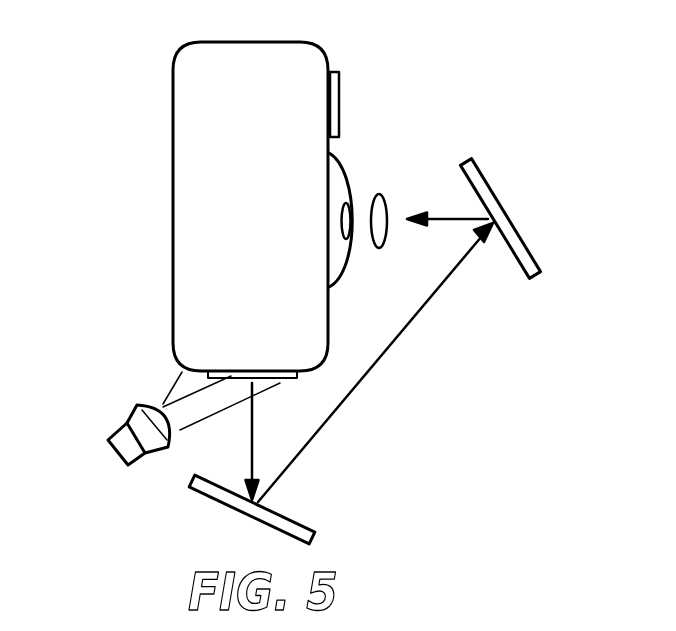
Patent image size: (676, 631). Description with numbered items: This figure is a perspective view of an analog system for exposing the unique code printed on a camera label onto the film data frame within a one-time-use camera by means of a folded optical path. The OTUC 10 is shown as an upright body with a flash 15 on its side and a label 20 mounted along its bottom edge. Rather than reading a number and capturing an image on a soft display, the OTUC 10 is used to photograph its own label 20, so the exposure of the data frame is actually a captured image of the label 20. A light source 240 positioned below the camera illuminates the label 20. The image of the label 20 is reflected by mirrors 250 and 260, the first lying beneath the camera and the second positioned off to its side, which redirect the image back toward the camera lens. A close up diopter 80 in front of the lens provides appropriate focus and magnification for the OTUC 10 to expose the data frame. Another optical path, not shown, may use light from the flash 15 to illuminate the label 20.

The OTUC 10 is at (185, 48).
The flash 15 is at (339, 93).
The label 20 is at (233, 381).
The close up diopter 80 is at (378, 193).
The light source 240 is at (108, 440).
The mirror 250 is at (216, 505).
The mirror 260 is at (500, 197).